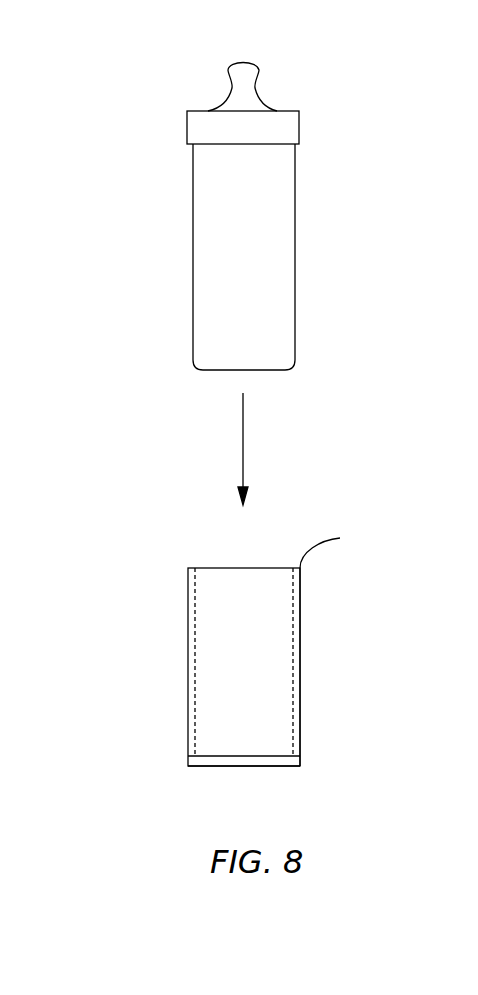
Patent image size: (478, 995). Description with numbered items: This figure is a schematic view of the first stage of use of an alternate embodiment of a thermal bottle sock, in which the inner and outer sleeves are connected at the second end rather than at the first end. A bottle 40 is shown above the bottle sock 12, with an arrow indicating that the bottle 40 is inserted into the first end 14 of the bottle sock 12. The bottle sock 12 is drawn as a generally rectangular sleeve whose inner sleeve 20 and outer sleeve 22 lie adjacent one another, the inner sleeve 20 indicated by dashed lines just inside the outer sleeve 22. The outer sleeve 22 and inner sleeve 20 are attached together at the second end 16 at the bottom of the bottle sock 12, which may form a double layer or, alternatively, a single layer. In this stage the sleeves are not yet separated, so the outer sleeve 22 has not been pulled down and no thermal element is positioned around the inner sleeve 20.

The bottle 40 is at (283, 218).
The bottle sock 12 is at (223, 671).
The first end 14 is at (285, 646).
The inner sleeve 20 is at (285, 625).
The outer sleeve 22 is at (301, 720).
The second end 16 is at (232, 767).